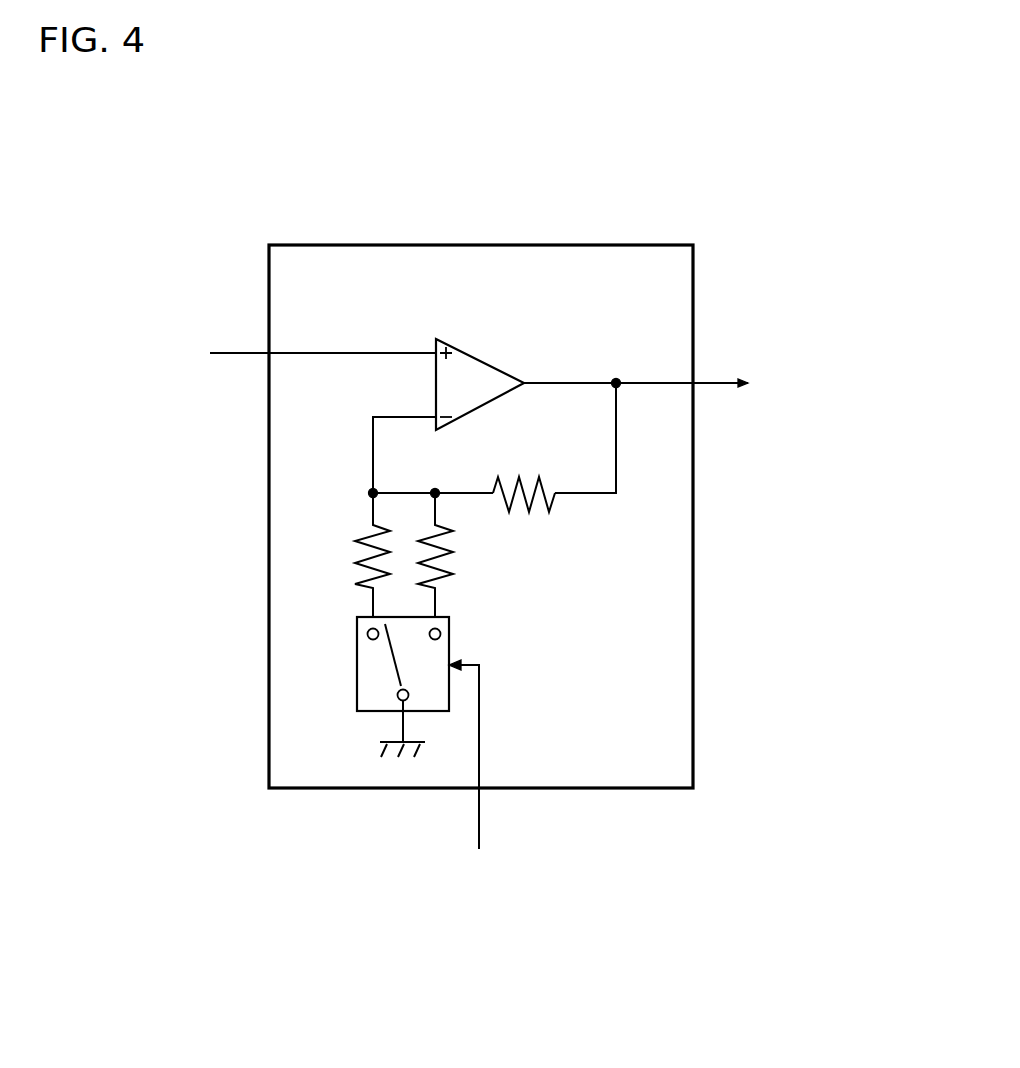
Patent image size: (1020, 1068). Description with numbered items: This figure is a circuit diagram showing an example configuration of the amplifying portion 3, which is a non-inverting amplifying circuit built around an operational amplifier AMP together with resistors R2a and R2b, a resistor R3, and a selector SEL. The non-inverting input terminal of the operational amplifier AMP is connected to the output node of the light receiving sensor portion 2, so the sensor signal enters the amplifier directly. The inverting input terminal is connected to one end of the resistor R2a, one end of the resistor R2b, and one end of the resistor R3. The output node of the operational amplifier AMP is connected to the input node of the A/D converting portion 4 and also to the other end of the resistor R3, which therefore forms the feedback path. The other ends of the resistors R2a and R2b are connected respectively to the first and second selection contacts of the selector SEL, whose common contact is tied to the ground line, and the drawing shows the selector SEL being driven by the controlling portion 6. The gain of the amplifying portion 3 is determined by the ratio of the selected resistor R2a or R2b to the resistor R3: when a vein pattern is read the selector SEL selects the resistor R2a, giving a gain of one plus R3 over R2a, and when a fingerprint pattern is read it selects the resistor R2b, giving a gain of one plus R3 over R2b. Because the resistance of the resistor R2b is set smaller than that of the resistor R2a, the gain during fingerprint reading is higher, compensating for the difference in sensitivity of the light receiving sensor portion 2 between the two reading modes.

The light receiving sensor portion 2 is at (241, 356).
The amplifying portion 3 is at (481, 245).
The A/D converting portion 4 is at (716, 418).
The controlling portion 6 is at (476, 791).
The operational amplifier AMP is at (481, 362).
The resistor R3 is at (524, 480).
The resistor R2a is at (360, 557).
The resistor R2b is at (449, 557).
The selector SEL is at (357, 665).